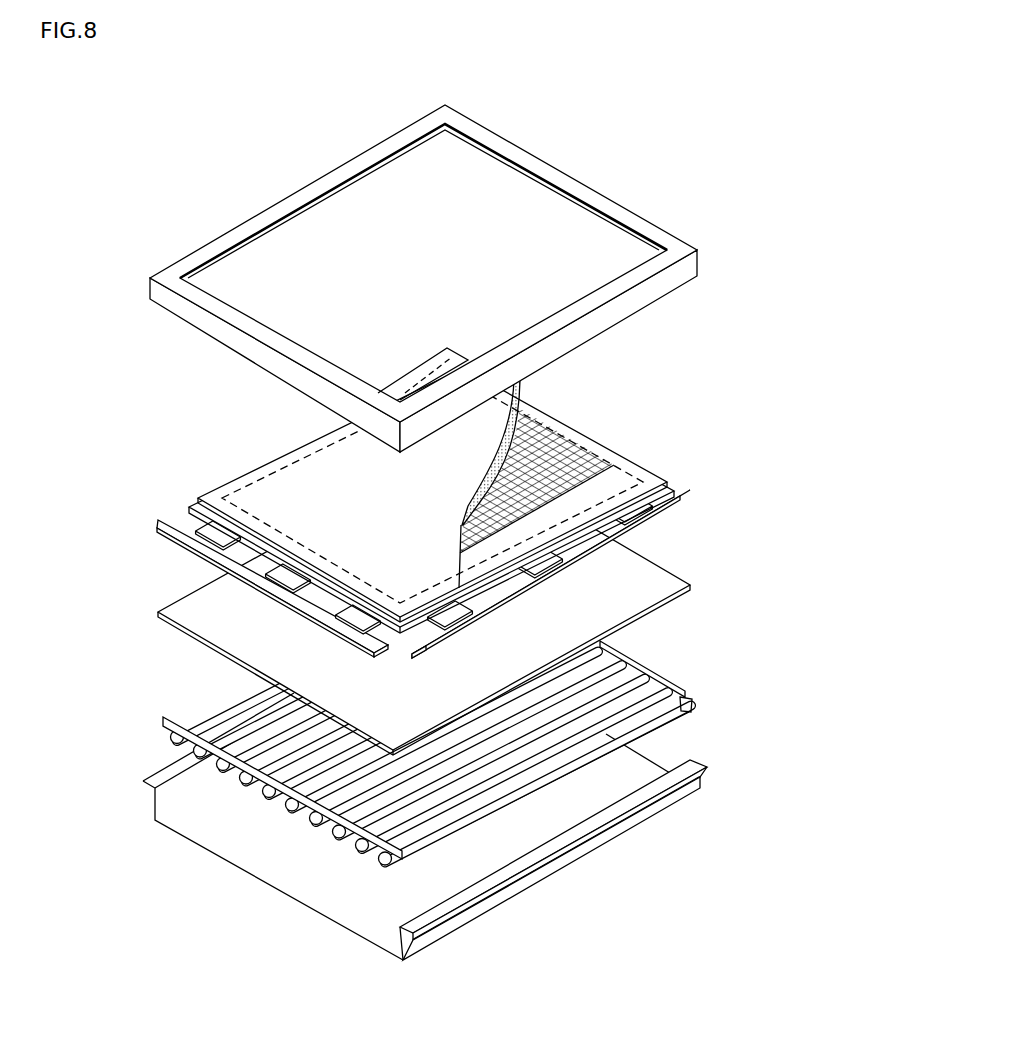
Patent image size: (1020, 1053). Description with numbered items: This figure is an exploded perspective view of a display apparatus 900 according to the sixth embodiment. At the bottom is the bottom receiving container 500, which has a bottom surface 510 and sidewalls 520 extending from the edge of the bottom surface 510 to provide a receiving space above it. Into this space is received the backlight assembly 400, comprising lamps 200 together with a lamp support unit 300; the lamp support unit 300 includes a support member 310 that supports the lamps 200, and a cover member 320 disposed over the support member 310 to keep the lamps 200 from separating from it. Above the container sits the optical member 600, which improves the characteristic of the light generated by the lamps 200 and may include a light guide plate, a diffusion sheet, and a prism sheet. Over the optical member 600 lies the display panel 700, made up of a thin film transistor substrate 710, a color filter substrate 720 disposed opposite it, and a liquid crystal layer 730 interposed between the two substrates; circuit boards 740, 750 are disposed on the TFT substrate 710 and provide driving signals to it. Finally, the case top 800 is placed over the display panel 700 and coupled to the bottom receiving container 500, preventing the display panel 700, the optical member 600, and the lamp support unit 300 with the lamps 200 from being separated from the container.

The display apparatus 900 is at (426, 549).
The case top 800 is at (688, 211).
The display panel 700 is at (424, 500).
The thin film transistor (TFT) substrate 710 is at (193, 505).
The color filter substrate 720 is at (220, 490).
The liquid crystal layer 730 is at (502, 461).
The circuit board 740 is at (405, 574).
The circuit board 750 is at (513, 589).
The optical member 600 is at (660, 572).
The backlight assembly 400 is at (483, 724).
The lamp support unit 300 is at (483, 753).
The support member 310 is at (694, 704).
The cover member 320 is at (694, 684).
The lamp 200 is at (652, 722).
The bottom receiving container 500 is at (425, 843).
The bottom surface 510 is at (504, 876).
The sidewall 520 is at (420, 946).